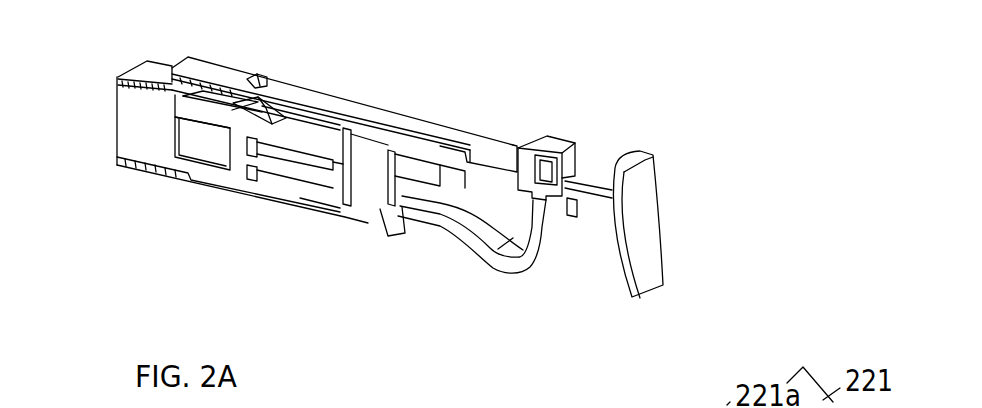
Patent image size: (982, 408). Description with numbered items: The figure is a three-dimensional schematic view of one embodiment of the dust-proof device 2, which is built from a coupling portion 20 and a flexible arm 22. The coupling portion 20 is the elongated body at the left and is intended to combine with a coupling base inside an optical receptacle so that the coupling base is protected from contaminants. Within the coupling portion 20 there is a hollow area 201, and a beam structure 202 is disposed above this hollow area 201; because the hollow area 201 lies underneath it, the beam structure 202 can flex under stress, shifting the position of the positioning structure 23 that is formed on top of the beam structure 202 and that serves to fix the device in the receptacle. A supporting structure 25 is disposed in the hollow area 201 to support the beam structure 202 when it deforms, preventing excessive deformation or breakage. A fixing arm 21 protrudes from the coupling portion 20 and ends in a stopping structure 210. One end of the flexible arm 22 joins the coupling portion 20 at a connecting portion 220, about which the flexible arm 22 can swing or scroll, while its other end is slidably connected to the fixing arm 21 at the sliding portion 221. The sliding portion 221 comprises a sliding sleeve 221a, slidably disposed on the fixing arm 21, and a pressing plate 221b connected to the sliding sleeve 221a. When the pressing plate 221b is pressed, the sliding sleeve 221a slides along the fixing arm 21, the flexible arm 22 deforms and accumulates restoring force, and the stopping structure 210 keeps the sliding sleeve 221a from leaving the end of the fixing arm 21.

The dust-proof device 2 is at (137, 29).
The coupling portion 20 is at (106, 163).
The hollow area 201 is at (207, 102).
The beam structure 202 is at (305, 100).
The supporting structure 25 is at (258, 110).
The positioning structure 23 is at (263, 77).
The fixing arm 21 is at (488, 133).
The stopping structure 210 is at (548, 173).
The flexible arm 22 is at (445, 242).
The connecting portion 220 is at (408, 190).
The sliding portion 221 is at (768, 167).
The sliding sleeve 221a is at (565, 165).
The pressing plate 221b is at (637, 220).